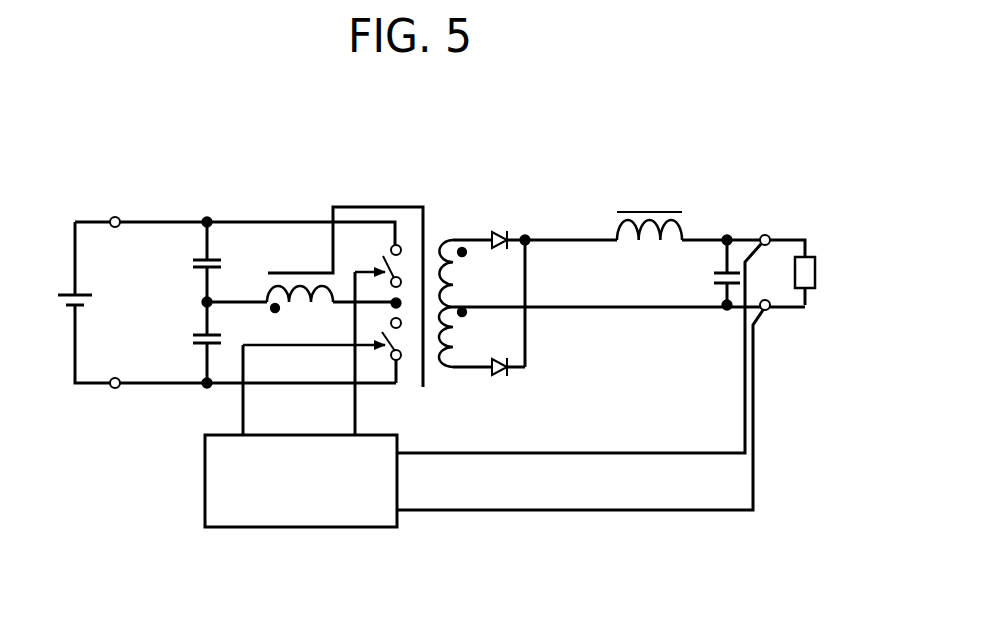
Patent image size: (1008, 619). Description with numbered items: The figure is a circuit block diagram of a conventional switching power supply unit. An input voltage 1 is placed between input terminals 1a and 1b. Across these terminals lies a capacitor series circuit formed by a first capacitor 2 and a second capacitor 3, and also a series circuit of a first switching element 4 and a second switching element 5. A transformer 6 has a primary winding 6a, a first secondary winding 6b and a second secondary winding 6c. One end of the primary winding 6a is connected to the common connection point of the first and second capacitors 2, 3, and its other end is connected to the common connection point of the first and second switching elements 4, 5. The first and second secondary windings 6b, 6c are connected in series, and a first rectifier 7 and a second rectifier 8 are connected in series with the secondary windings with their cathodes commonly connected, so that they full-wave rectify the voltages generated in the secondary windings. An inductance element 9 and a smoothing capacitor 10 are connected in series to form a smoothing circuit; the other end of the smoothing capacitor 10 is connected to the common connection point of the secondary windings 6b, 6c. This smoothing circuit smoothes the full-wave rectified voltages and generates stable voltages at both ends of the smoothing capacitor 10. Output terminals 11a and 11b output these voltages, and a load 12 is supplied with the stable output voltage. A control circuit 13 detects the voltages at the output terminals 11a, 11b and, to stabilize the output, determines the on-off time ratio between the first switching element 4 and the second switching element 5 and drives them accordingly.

The input voltage 1 is at (63, 290).
The input terminal 1a is at (112, 216).
The input terminal 1b is at (113, 389).
The first capacitor 2 is at (197, 256).
The second capacitor 3 is at (192, 350).
The first switching element 4 is at (383, 256).
The second switching element 5 is at (387, 352).
The transformer 6 is at (326, 363).
The primary winding 6a is at (295, 306).
The first secondary winding 6b is at (450, 240).
The second secondary winding 6c is at (452, 357).
The first rectifier 7 is at (500, 230).
The second rectifier 8 is at (500, 378).
The inductance element 9 is at (642, 212).
The smoothing capacitor 10 is at (720, 270).
The output terminal 11a is at (768, 234).
The output terminal 11b is at (767, 312).
The load 12 is at (817, 266).
The control circuit 13 is at (252, 530).